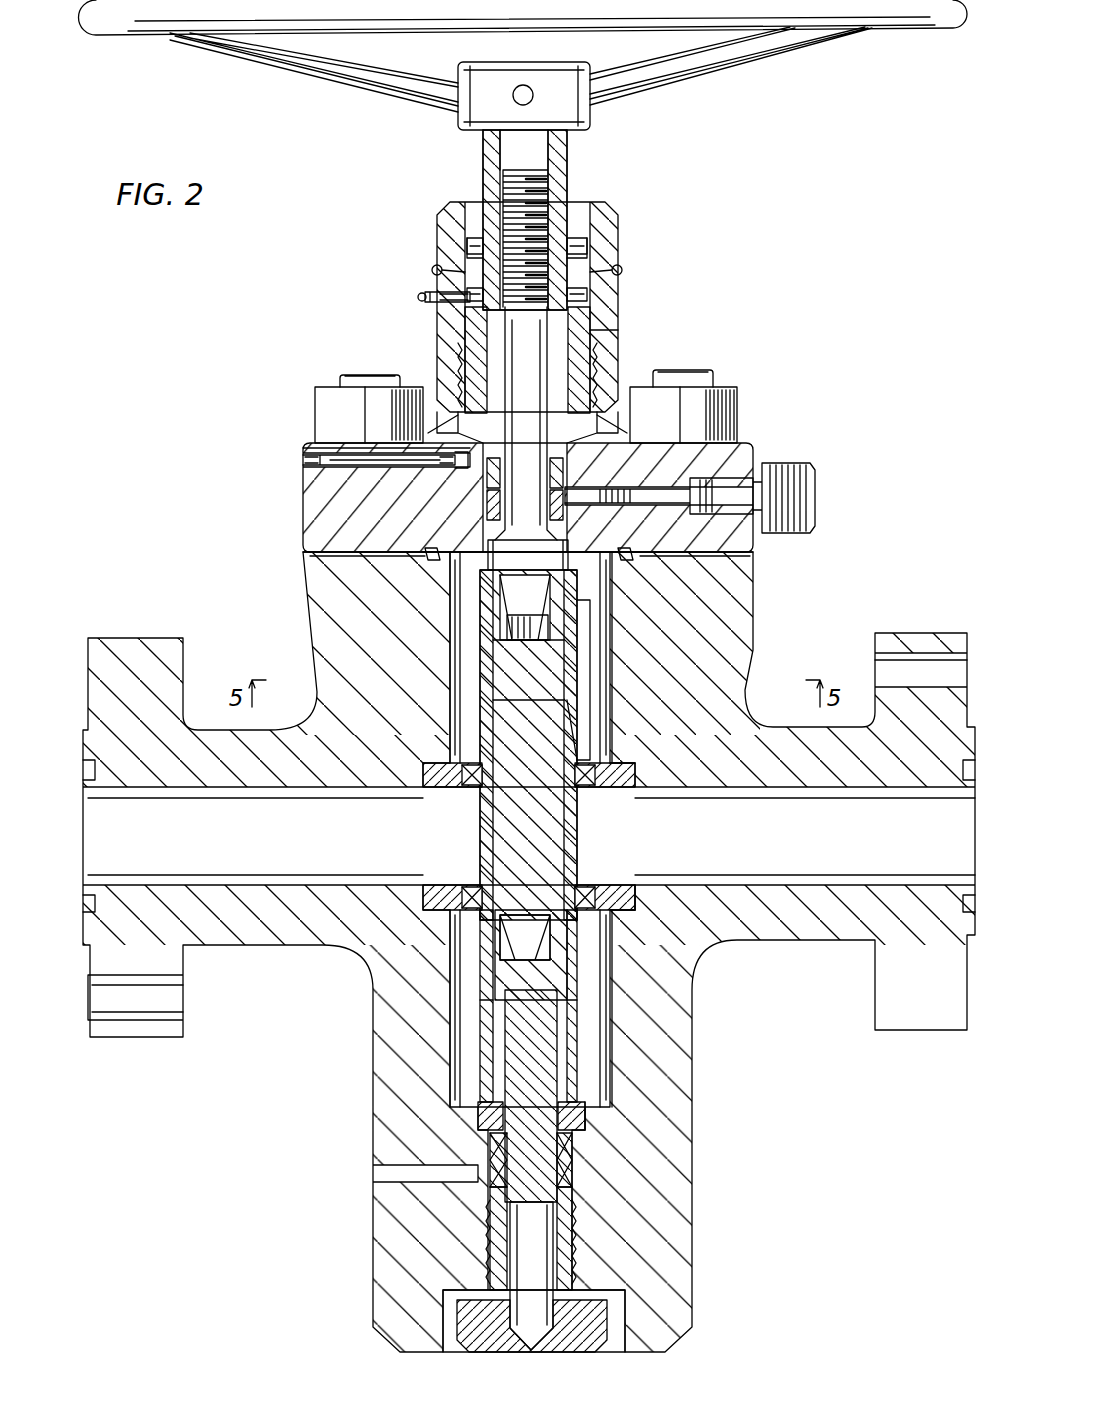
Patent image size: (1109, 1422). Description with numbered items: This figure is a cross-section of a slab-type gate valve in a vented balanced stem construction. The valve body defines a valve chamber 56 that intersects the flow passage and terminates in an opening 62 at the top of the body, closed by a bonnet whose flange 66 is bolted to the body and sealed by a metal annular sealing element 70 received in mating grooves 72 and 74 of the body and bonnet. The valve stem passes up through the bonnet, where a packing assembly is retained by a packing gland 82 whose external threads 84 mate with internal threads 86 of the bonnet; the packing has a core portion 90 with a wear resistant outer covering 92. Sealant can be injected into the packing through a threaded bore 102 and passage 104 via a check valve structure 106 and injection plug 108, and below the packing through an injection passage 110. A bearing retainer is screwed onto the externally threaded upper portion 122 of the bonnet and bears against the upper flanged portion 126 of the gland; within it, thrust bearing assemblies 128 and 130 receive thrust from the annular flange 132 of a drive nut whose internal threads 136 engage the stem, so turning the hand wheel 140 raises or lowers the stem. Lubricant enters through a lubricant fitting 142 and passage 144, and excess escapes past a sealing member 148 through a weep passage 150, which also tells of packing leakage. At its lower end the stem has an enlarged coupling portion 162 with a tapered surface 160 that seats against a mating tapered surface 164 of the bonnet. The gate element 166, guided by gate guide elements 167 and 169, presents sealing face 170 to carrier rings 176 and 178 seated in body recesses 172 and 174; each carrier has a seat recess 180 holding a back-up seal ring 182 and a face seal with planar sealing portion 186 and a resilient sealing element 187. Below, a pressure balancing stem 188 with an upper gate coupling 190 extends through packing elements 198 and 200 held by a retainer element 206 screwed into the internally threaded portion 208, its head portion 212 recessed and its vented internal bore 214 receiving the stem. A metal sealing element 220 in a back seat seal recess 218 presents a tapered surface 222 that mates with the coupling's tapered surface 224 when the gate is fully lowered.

The valve chamber 56 is at (695, 1020).
The opening 62 is at (622, 560).
The flange 66 is at (300, 528).
The annular sealing element 70 is at (425, 548).
The annular groove 72 is at (430, 556).
The annular groove 74 is at (498, 558).
The packing gland 82 is at (618, 365).
The external threads 84 is at (472, 360).
The internal threads 86 is at (455, 350).
The core portion 90 is at (486, 478).
The wear resistant outer covering 92 is at (490, 505).
The threaded bore 102 is at (340, 462).
The lubricant and sealant passage 104 is at (458, 428).
The check valve structure 106 is at (430, 466).
The injection plug 108 is at (318, 450).
The injection passage 110 is at (612, 488).
The externally threaded upper portion 122 is at (445, 365).
The upper flanged portion 126 is at (592, 330).
The thrust bearing assembly 128 is at (555, 262).
The thrust bearing assembly 130 is at (587, 296).
The annular flange 132 is at (500, 255).
The internal threads 136 is at (587, 246).
The hand wheel 140 is at (700, 5).
The lubricant fitting 142 is at (432, 272).
The lubricant passage 144 is at (420, 297).
The sealing member 148 is at (622, 270).
The passage 150 is at (470, 250).
The tapered surface 160 is at (452, 600).
The enlarged coupling portion 162 is at (575, 615).
The tapered surface 164 is at (570, 548).
The gate element 166 is at (577, 745).
The gate guide element 167 is at (493, 690).
The gate guide element 169 is at (590, 700).
The sealing face 170 is at (485, 663).
The seat recess 172 is at (612, 680).
The seat recess 174 is at (640, 902).
The carrier ring 176 is at (425, 770).
The carrier ring 178 is at (640, 780).
The seat recess 180 is at (605, 873).
The seal ring 182 is at (640, 766).
The planar sealing portion 186 is at (558, 882).
The resilient sealing element 187 is at (580, 922).
The pressure balancing stem 188 is at (510, 1045).
The upper gate coupling 190 is at (495, 962).
The packing element 198 is at (570, 1160).
The packing element 200 is at (567, 1190).
The retainer element 206 is at (490, 1235).
The internally threaded portion 208 is at (492, 1262).
The head portion 212 is at (465, 1320).
The internal bore 214 is at (555, 1245).
The back seat seal recess 218 is at (585, 1120).
The metal sealing element 220 is at (478, 1115).
The tapered surface 222 is at (612, 1090).
The tapered surface 224 is at (580, 975).